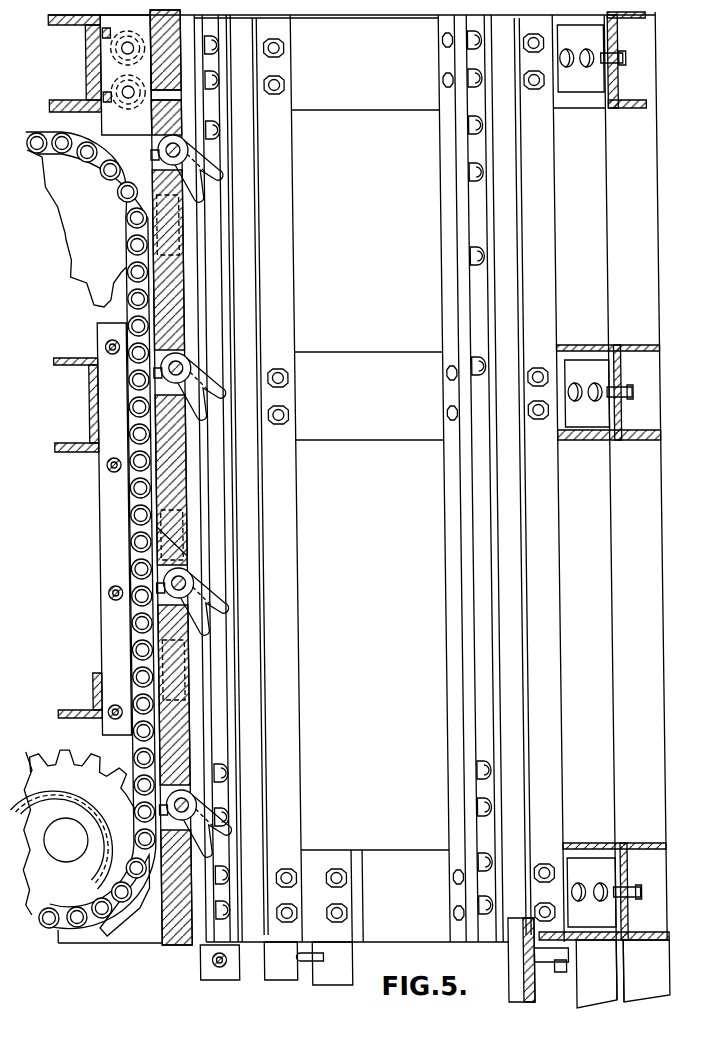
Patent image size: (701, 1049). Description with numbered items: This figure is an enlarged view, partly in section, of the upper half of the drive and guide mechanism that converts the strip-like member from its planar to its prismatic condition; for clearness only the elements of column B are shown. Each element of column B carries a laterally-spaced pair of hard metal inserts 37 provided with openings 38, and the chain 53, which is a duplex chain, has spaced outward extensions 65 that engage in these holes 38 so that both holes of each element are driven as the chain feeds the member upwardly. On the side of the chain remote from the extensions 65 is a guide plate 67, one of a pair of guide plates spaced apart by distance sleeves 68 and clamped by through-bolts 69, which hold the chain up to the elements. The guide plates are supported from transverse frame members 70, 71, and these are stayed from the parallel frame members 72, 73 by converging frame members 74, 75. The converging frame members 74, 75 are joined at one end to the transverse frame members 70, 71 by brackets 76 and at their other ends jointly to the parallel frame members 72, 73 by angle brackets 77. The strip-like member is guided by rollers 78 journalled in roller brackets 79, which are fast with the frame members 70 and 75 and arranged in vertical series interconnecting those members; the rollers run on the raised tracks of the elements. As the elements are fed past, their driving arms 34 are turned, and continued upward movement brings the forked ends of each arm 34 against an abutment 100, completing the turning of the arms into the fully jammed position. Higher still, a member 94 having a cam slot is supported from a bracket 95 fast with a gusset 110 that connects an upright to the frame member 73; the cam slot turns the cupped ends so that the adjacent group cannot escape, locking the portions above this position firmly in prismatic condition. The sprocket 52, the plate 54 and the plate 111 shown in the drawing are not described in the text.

The driving arm 34 is at (203, 165).
The hard metal insert 37 is at (152, 209).
The opening 38 is at (152, 247).
The sprocket 52 is at (62, 758).
The chain 53 is at (65, 928).
The plate 54 is at (68, 278).
The outward extension 65 is at (108, 922).
The guide plate 67 is at (95, 553).
The distance sleeve 68 is at (101, 592).
The through-bolt 69 is at (102, 598).
The transverse frame member 70 is at (62, 443).
The transverse frame member 71 is at (57, 710).
The parallel frame member 72 is at (638, 441).
The parallel frame member 73 is at (632, 933).
The converging frame member 74 is at (355, 358).
The converging frame member 75 is at (390, 853).
The bracket 76 is at (308, 853).
The angle bracket 77 is at (580, 430).
The roller 78 is at (466, 97).
The roller bracket 79 is at (202, 267).
The cam slot member 94 is at (504, 985).
The bracket 95 is at (530, 994).
The abutment 100 is at (207, 968).
The gusset 110 is at (622, 942).
The plate 111 is at (566, 986).
The column B is at (180, 538).